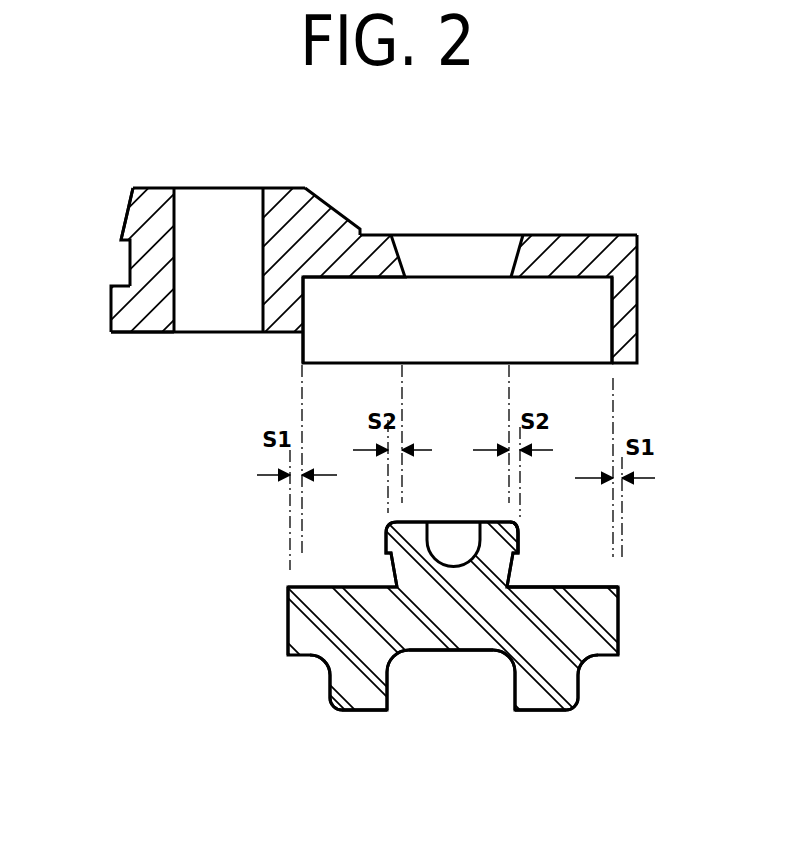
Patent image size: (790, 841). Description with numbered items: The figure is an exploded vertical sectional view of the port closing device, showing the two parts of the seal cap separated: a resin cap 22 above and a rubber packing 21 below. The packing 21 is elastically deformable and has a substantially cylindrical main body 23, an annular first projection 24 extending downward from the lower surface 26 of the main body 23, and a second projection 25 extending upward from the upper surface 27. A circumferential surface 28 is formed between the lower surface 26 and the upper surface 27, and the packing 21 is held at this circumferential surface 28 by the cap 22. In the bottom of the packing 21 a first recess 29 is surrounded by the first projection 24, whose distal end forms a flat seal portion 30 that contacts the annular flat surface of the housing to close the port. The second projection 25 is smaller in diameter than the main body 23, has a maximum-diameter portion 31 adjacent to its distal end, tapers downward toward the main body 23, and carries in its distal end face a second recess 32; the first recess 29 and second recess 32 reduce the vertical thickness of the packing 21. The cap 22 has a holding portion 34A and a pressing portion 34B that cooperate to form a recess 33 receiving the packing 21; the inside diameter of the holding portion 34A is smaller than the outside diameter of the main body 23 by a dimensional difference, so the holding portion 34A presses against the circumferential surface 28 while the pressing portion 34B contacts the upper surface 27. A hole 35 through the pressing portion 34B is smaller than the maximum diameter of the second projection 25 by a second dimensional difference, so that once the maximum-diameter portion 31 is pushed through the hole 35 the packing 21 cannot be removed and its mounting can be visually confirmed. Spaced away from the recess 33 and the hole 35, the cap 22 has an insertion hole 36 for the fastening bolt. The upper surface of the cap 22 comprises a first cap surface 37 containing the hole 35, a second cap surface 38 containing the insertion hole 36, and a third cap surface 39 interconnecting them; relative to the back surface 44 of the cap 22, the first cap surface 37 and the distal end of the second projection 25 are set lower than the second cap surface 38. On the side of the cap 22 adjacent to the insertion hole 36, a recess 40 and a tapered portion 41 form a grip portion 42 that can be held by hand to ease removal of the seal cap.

The packing 21 is at (620, 630).
The cap 22 is at (548, 237).
The main body 23 is at (372, 607).
The first projection 24 is at (562, 685).
The second projection 25 is at (425, 532).
The lower surface 26 is at (464, 652).
The upper surface 27 is at (585, 587).
The circumferential surface 28 is at (620, 612).
The first recess 29 is at (451, 680).
The flat seal portion 30 is at (371, 712).
The maximum-diameter portion 31 is at (520, 541).
The second recess 32 is at (453, 544).
The recess 33 is at (457, 320).
The holding portion 34A is at (605, 312).
The pressing portion 34B is at (372, 280).
The hole 35 is at (458, 261).
The insertion hole 36 is at (263, 228).
The first cap surface 37 is at (624, 236).
The second cap surface 38 is at (165, 187).
The third cap surface 39 is at (343, 215).
The recess 40 is at (128, 268).
The tapered portion 41 is at (130, 200).
The grip portion 42 is at (125, 226).
The back surface 44 is at (138, 335).